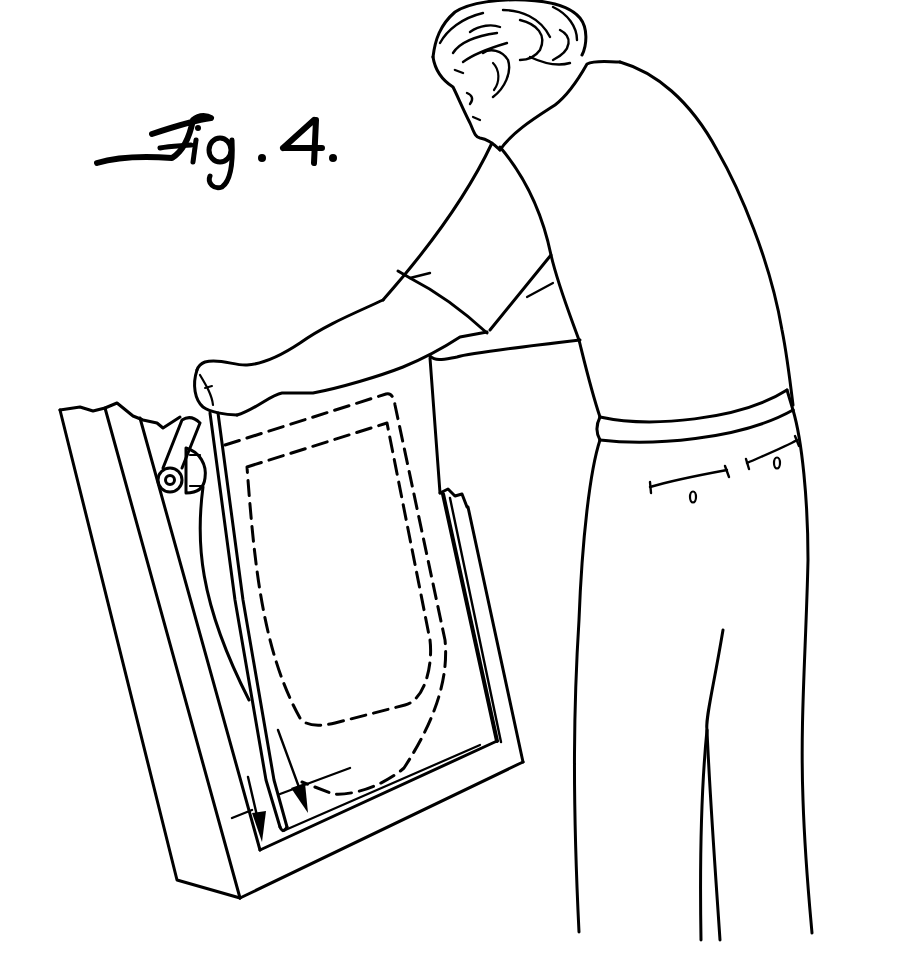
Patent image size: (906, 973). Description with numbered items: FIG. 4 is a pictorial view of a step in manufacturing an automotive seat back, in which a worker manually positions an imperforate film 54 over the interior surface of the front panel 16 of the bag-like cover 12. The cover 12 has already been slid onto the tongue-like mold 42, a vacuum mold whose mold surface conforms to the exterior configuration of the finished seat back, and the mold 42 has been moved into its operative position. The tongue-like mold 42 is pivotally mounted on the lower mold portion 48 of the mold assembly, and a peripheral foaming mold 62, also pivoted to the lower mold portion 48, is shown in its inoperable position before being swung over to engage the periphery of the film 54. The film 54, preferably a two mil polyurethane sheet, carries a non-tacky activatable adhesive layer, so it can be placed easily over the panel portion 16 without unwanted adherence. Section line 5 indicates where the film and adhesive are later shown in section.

The bag-like structure (cover) 12 is at (213, 573).
The front panel 16 is at (230, 632).
The tongue-like mold 42 is at (158, 483).
The lower mold portion 48 is at (167, 758).
The imperforate film 54 is at (423, 455).
The peripheral foaming mold 62 is at (179, 419).
The section line 5- 5 is at (291, 807).